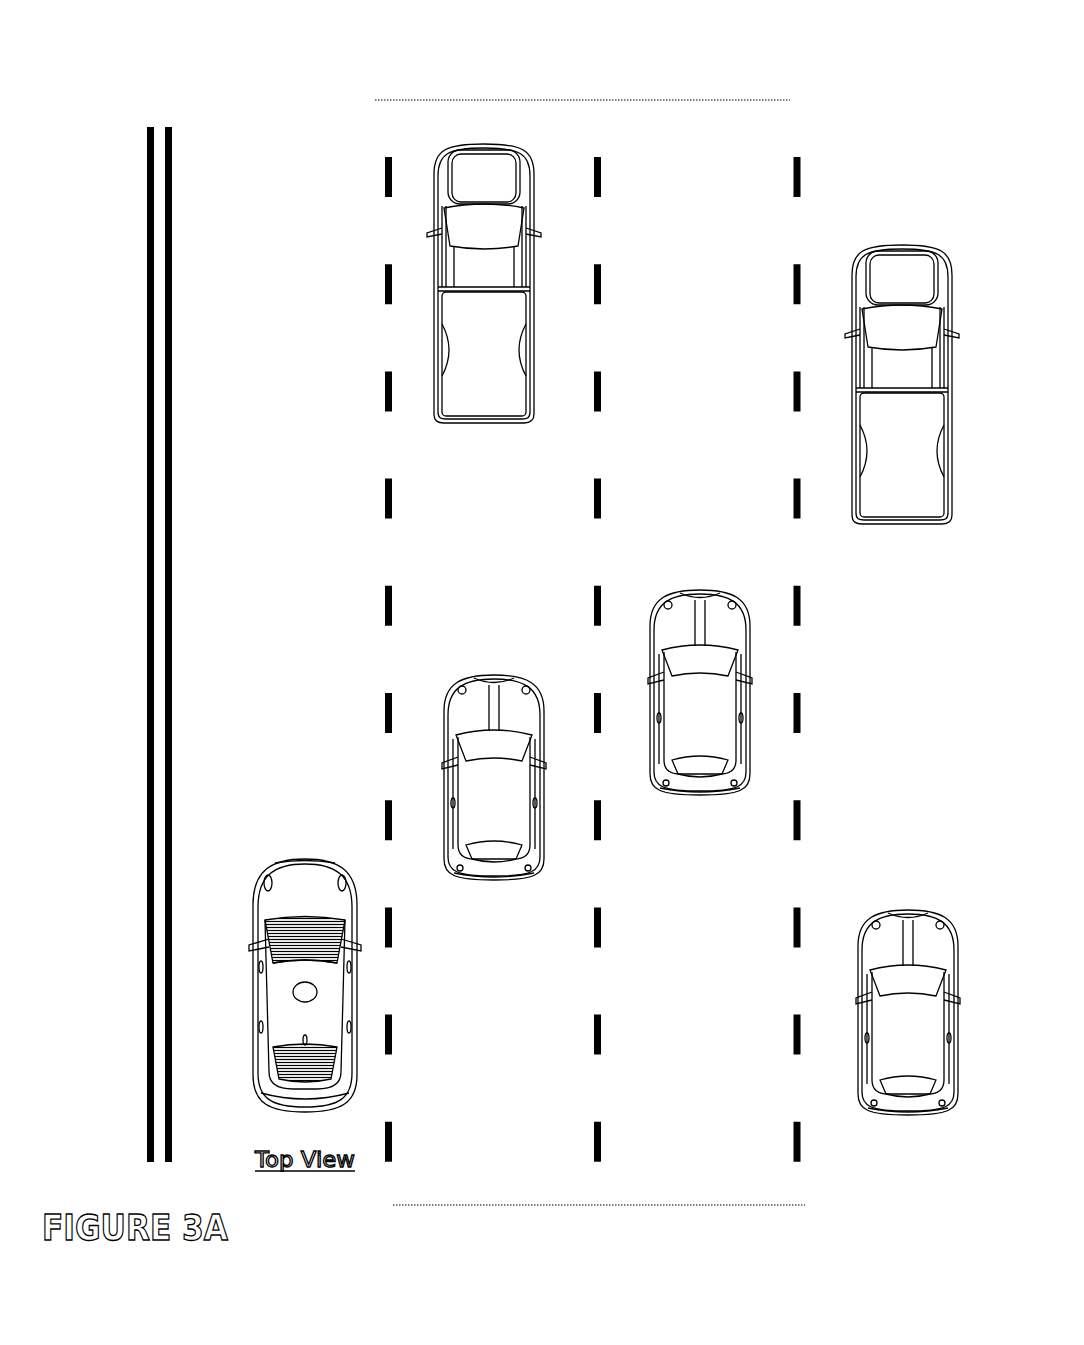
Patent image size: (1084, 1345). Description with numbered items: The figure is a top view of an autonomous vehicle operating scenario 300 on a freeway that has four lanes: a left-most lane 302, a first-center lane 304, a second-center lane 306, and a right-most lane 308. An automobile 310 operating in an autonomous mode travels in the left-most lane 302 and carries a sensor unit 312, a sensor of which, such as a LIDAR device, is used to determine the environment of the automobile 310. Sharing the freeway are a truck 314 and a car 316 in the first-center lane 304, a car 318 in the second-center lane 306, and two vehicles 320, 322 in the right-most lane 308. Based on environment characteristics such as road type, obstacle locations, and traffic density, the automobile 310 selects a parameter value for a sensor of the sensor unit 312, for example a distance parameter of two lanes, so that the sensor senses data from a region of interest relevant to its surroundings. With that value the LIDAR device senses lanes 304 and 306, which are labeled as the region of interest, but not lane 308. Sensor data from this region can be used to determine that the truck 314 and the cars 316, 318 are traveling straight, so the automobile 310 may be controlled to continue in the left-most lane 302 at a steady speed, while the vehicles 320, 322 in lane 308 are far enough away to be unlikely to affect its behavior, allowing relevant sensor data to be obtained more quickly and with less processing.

The scenario 300 is at (93, 97).
The left-most lane 302 is at (295, 87).
The first-center lane 304 is at (532, 87).
The second-center lane 306 is at (727, 87).
The right-most lane 308 is at (883, 87).
The automobile 310 is at (257, 900).
The sensor unit 312 is at (295, 999).
The truck 314 is at (462, 148).
The car 316 is at (462, 683).
The car 318 is at (667, 594).
The vehicle 320 is at (874, 912).
The vehicle 322 is at (878, 245).